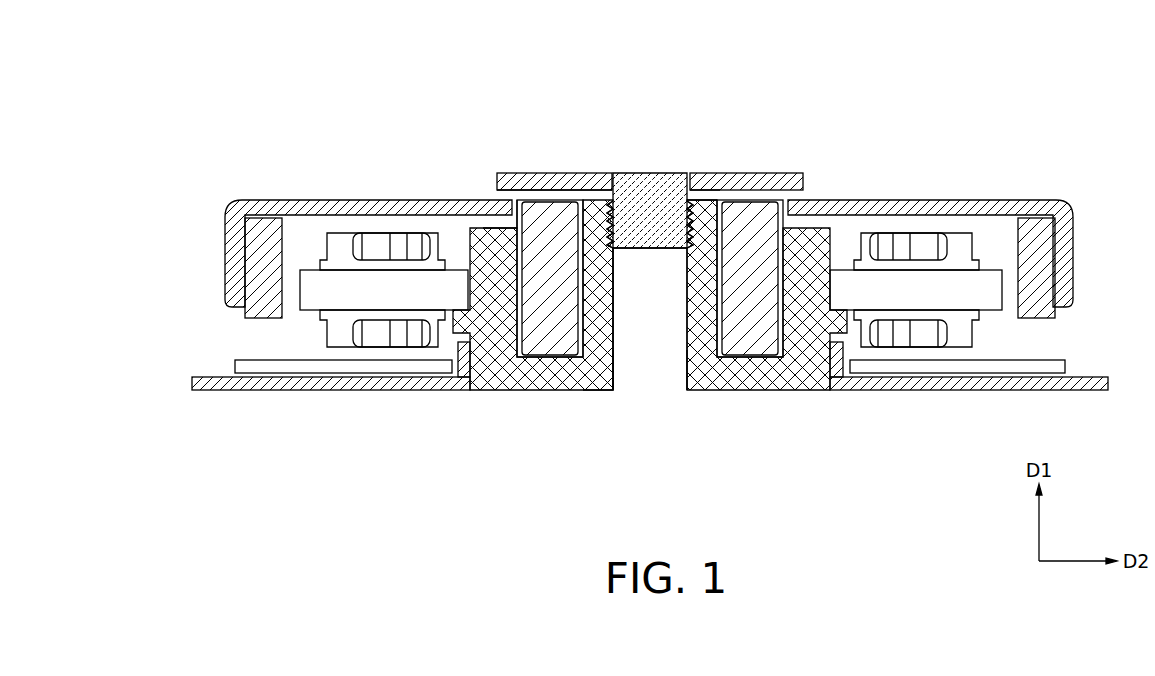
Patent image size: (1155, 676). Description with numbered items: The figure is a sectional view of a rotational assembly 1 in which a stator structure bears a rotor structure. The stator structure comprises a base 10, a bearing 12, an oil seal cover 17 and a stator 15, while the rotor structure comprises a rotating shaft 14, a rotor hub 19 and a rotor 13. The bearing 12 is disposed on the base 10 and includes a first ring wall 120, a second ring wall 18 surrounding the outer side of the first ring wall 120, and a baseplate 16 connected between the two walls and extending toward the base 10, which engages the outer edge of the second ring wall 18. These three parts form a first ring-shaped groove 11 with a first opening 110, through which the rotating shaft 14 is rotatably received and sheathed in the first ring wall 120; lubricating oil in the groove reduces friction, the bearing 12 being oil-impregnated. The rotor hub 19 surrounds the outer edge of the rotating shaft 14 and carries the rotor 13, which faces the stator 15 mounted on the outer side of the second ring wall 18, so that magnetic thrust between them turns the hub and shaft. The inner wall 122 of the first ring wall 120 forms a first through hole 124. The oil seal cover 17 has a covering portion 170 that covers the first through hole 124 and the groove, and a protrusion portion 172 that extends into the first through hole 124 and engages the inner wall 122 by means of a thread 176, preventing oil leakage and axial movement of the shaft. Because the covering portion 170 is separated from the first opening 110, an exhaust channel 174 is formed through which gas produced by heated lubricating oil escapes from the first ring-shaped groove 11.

The rotational assembly 1 is at (170, 48).
The base 10 is at (232, 392).
The first ring-shaped groove 11 is at (530, 219).
The first opening 110 is at (511, 215).
The bearing 12 is at (650, 352).
The first ring wall 120 is at (596, 355).
The inner wall 122 is at (613, 347).
The first through hole 124 is at (666, 374).
The rotor 13 is at (262, 240).
The rotating shaft 14 is at (555, 225).
The stator 15 is at (372, 243).
The baseplate 16 is at (542, 388).
The oil seal cover 17 is at (650, 153).
The covering portion 170 is at (585, 183).
The protrusion portion 172 is at (647, 203).
The exhaust channel 174 is at (573, 180).
The thread 176 is at (707, 193).
The second ring wall 18 is at (490, 367).
The rotor hub 19 is at (397, 208).